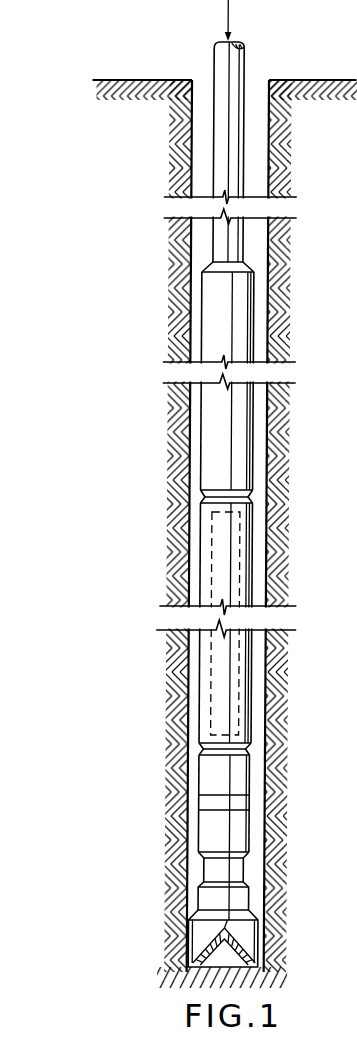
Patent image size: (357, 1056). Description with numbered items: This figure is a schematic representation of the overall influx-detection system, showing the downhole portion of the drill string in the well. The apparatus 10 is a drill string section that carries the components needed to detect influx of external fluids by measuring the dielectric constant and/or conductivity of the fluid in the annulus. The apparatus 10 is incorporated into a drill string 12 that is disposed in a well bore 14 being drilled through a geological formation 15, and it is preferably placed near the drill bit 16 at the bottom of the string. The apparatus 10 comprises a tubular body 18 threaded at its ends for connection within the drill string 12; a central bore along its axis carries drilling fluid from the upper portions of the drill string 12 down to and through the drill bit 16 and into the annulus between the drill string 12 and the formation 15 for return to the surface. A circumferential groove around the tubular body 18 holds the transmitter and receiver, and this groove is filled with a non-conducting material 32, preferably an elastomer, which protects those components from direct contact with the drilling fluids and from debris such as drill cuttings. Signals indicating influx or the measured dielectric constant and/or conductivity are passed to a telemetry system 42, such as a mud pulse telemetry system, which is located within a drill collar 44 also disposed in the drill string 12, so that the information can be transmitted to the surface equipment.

The apparatus 10 is at (302, 796).
The drill string 12 is at (238, 252).
The well bore 14 is at (192, 255).
The geological formation 15 is at (157, 938).
The drill bit 16 is at (254, 935).
The tubular body 18 is at (213, 771).
The non-conducting material 32 is at (215, 803).
The telemetry system 42 is at (231, 538).
The drill collar 44 is at (246, 507).